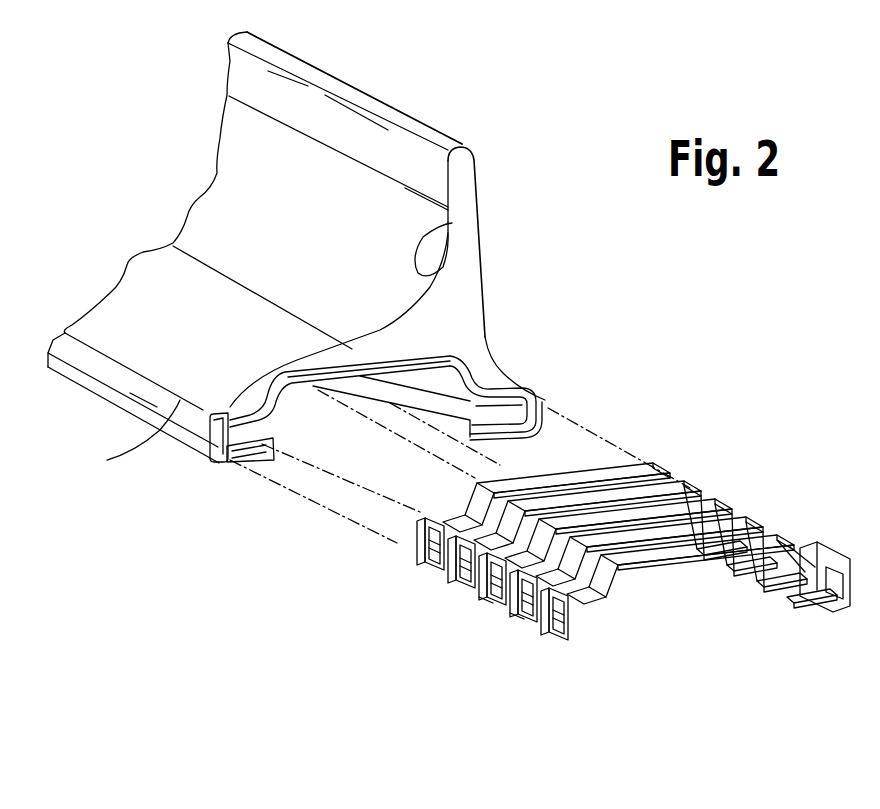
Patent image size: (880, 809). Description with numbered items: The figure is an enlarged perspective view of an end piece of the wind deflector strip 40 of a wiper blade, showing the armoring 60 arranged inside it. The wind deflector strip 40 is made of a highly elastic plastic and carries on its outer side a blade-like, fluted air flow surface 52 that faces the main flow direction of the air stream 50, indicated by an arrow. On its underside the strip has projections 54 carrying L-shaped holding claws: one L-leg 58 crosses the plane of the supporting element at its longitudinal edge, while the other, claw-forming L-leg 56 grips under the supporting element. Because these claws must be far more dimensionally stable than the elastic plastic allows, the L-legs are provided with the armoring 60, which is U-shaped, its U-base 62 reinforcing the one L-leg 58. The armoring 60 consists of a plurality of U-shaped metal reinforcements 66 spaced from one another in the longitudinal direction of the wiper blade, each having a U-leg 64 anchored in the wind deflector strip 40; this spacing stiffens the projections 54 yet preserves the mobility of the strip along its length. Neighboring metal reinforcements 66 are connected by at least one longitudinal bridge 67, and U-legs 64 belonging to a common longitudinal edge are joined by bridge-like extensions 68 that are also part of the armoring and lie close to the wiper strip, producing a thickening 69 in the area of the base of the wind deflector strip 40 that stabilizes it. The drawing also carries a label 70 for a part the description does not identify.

The wind deflector strip 40 is at (413, 112).
The main flow direction of the air stream 50 is at (283, 232).
The air flow surface 52 is at (452, 223).
The projections 54 is at (210, 474).
The claws 56 is at (583, 428).
The L-leg 58 is at (538, 417).
The armoring 60 is at (262, 397).
The U-base 62 is at (214, 442).
The U-leg 64 is at (463, 523).
The U-shaped metal reinforcements 66 is at (777, 517).
The longitudinal bridge 67 is at (500, 600).
The bridge-like extensions 68 is at (627, 523).
The thickening 69 is at (458, 337).
The spring bar 70 is at (405, 357).